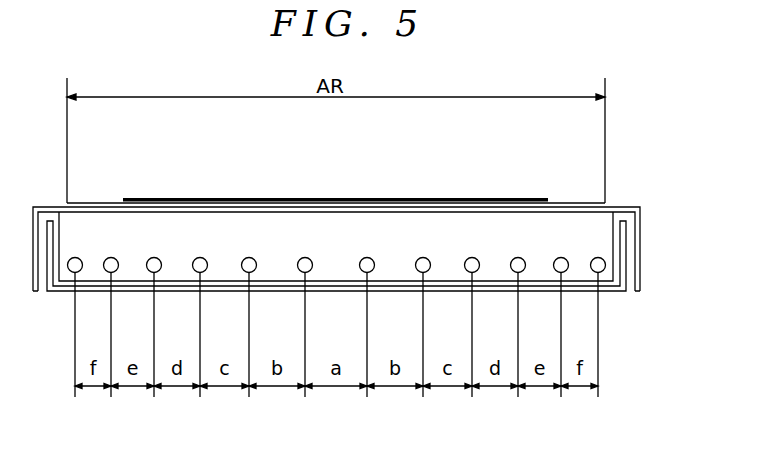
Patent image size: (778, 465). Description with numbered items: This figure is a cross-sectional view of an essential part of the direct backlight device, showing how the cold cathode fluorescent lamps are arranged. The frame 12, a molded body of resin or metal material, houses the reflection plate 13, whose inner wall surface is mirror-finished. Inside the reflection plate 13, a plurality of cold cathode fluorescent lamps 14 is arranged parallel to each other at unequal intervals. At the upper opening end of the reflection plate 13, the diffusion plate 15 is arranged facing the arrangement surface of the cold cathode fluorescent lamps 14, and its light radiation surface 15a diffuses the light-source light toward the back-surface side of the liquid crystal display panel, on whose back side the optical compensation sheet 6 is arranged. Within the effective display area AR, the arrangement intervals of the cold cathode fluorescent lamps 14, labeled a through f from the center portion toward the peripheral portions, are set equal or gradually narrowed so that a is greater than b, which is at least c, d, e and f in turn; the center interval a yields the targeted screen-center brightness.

The optical compensation sheet 6 is at (144, 198).
The frame 12 is at (641, 268).
The reflection plate 13 is at (276, 281).
The cold cathode fluorescent lamps 14 is at (367, 257).
The diffusion plate 15 is at (640, 210).
The light radiation surface 15a is at (571, 203).